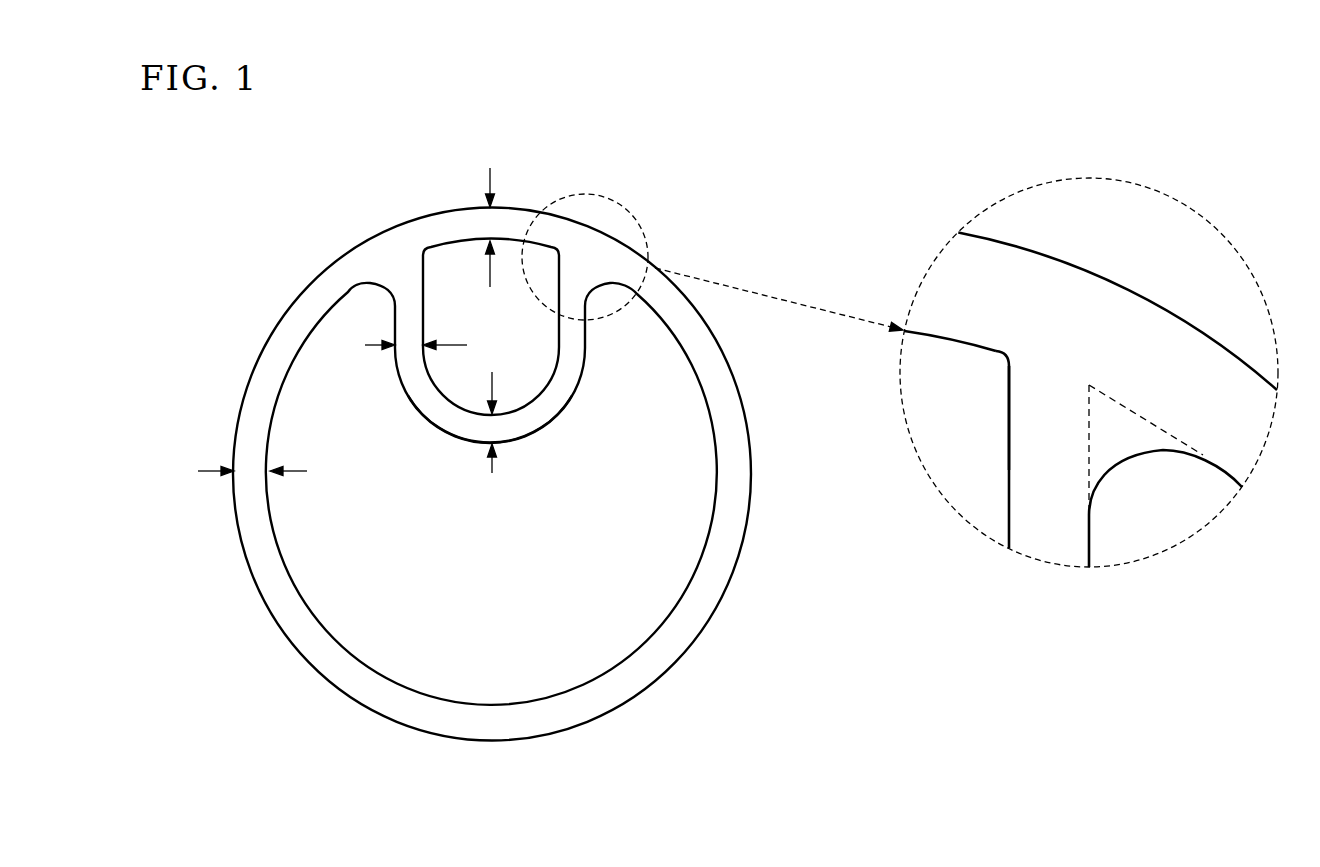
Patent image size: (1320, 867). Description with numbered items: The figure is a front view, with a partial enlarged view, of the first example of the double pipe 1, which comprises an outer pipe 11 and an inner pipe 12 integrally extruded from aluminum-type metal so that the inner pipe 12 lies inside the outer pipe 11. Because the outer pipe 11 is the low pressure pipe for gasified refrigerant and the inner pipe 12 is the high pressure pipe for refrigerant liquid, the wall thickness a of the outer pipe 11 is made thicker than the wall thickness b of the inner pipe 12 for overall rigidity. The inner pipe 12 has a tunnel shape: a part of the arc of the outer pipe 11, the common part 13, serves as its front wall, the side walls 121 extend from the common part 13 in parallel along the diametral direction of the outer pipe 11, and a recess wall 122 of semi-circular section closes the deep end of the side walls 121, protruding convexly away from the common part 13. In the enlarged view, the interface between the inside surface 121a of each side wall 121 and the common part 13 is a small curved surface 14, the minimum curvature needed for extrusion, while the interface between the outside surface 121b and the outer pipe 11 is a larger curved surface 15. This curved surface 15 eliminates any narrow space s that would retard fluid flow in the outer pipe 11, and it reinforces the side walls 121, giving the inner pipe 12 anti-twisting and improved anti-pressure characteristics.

The double pipe 1 is at (290, 262).
The outer pipe 11 is at (698, 662).
The inner pipe 12 is at (426, 442).
The side walls 121 is at (438, 317).
The inside surface 121a is at (1006, 414).
The outside surface 121b is at (1095, 564).
The recess wall 122 is at (481, 442).
The common part 13 is at (517, 208).
The small curved surface 14 is at (991, 362).
The curved surface 15 is at (1130, 463).
The wall thickness a is at (489, 223).
The wall thickness b is at (408, 348).
The narrow space s is at (1128, 424).